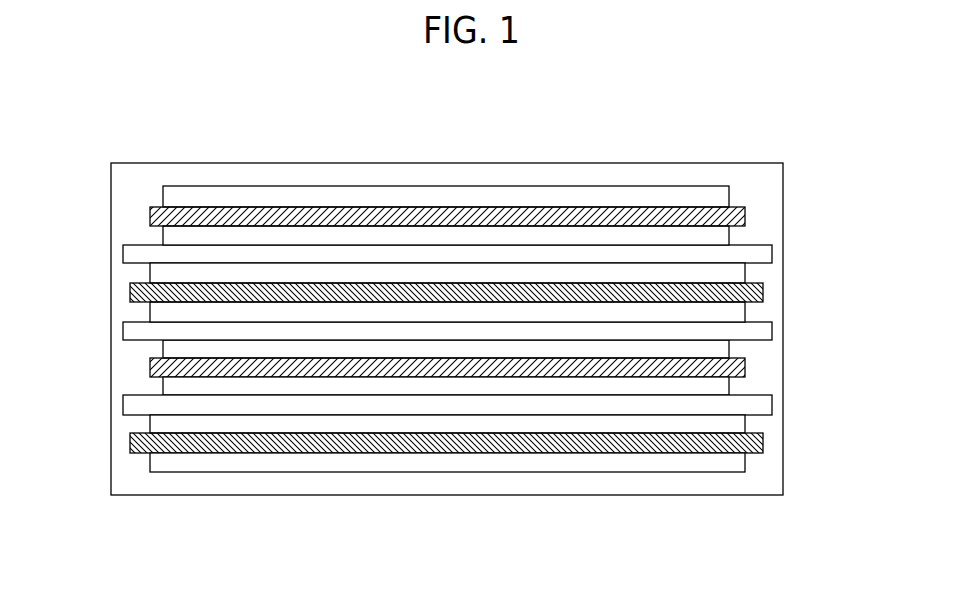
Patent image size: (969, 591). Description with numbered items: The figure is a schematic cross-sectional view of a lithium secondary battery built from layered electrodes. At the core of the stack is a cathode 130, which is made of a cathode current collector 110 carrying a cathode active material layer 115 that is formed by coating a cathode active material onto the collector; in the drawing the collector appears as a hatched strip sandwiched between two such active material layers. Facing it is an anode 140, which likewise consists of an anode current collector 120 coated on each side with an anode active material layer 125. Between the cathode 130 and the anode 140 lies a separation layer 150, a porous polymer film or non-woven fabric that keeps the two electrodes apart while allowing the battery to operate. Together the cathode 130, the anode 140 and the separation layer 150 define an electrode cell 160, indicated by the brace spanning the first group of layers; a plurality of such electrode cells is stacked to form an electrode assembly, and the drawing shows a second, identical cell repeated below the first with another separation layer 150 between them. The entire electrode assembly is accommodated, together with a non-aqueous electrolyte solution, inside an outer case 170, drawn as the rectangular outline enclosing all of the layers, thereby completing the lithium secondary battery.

The cathode current collector 110 is at (746, 214).
The cathode active material layer 115 is at (731, 192).
The anode current collector 120 is at (491, 296).
The anode active material layer 125 is at (746, 270).
The cathode 130 is at (444, 220).
The anode 140 is at (444, 296).
The separation layer 150 is at (123, 254).
The electrode cell 160 is at (475, 259).
The outer case 170 is at (445, 495).